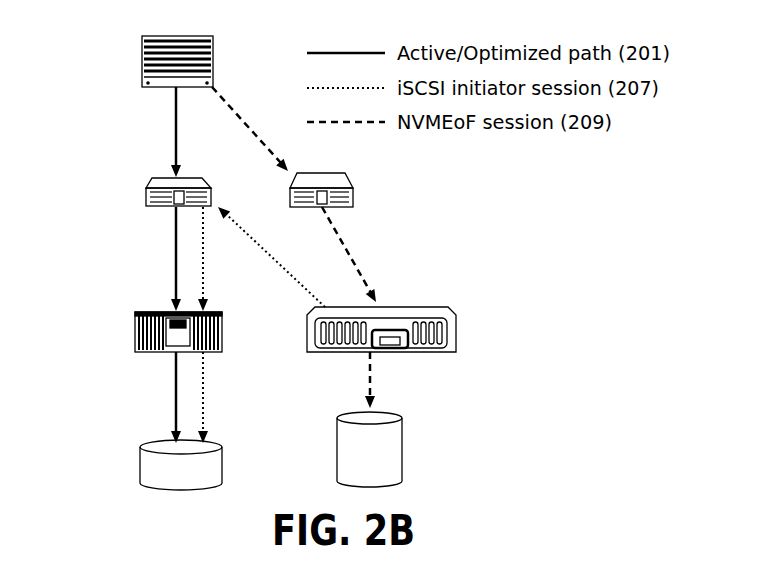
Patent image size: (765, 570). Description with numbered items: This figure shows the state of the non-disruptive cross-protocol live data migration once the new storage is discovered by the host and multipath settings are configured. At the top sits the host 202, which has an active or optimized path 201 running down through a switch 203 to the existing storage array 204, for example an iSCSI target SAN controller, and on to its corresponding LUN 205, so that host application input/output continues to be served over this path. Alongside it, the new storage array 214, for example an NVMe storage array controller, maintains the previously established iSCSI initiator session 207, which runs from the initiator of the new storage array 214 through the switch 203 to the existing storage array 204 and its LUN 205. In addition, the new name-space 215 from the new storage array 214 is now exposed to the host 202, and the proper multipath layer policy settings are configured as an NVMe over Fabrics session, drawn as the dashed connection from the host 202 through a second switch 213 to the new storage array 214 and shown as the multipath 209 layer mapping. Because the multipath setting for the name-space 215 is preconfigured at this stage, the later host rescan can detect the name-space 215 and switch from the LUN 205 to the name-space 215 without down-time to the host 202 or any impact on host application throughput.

The active or optimized path 201 is at (172, 126).
The host 202 is at (141, 50).
The switch 203 is at (145, 194).
The existing storage array 204 is at (135, 330).
The LUN 205 is at (139, 463).
The iSCSI initiator session 207 is at (250, 246).
The multipath 209 is at (353, 250).
The switch 213 is at (354, 195).
The new storage array 214 is at (456, 331).
The name-space 215 is at (403, 440).